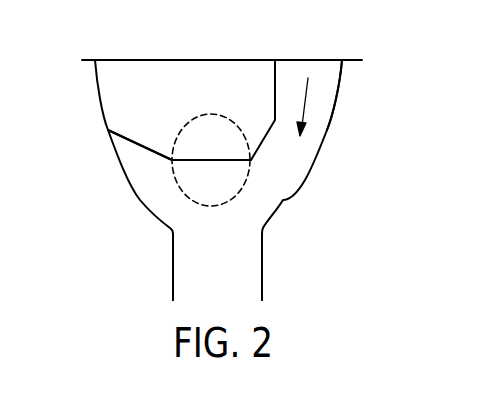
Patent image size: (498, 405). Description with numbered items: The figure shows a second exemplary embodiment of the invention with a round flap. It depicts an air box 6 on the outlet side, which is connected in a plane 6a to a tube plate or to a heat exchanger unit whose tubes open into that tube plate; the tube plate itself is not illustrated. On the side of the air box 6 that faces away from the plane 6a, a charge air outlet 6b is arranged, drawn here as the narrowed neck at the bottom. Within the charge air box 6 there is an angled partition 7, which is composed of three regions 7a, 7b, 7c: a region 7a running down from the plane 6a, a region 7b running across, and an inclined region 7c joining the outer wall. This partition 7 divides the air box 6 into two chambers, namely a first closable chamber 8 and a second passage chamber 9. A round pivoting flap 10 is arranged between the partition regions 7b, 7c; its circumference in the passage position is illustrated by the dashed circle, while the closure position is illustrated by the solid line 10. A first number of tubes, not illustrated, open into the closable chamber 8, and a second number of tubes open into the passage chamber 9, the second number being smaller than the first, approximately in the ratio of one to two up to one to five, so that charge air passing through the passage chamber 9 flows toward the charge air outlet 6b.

The air box 6 is at (92, 93).
The plane 6a is at (220, 60).
The charge air outlet 6b is at (217, 267).
The angled partition 7 is at (117, 132).
The partition region 7a is at (276, 70).
The partition region 7b is at (263, 147).
The partition region 7c is at (135, 143).
The closable chamber 8 is at (235, 107).
The passage chamber 9 is at (327, 98).
The round pivoting flap 10 is at (210, 161).